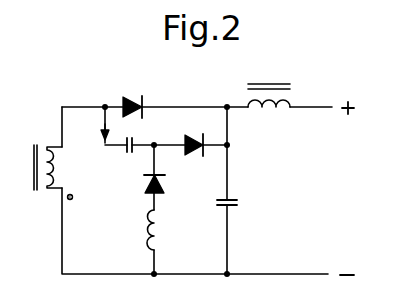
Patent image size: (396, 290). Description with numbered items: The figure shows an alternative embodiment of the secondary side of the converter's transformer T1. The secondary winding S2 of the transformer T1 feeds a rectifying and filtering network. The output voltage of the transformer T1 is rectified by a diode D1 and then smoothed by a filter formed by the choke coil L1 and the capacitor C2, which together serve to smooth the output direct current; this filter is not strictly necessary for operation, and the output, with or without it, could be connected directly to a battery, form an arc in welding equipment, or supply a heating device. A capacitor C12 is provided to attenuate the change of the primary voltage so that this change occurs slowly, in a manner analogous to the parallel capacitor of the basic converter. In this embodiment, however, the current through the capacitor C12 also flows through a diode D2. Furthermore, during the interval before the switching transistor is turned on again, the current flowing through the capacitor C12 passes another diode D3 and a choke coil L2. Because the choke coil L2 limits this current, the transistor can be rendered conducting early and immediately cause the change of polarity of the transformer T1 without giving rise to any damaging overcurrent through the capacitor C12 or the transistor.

The transformer T1 is at (38, 155).
The secondary winding S2 is at (62, 167).
The capacitor C12 is at (101, 154).
The diode D1 is at (133, 95).
The diode D2 is at (196, 135).
The diode D3 is at (168, 182).
The choke coil L1 is at (269, 109).
The choke coil L2 is at (167, 230).
The capacitor C2 is at (236, 216).